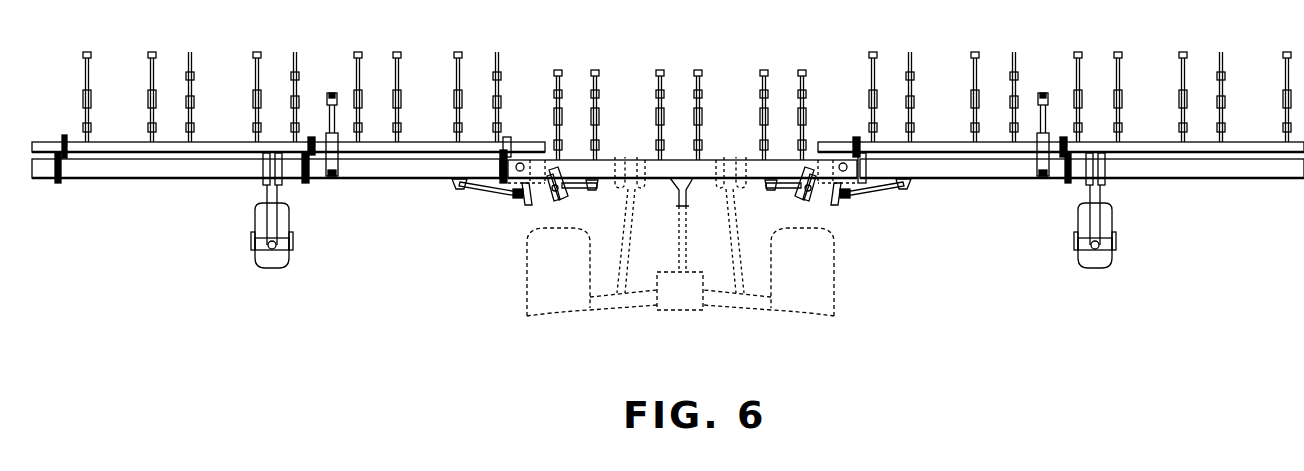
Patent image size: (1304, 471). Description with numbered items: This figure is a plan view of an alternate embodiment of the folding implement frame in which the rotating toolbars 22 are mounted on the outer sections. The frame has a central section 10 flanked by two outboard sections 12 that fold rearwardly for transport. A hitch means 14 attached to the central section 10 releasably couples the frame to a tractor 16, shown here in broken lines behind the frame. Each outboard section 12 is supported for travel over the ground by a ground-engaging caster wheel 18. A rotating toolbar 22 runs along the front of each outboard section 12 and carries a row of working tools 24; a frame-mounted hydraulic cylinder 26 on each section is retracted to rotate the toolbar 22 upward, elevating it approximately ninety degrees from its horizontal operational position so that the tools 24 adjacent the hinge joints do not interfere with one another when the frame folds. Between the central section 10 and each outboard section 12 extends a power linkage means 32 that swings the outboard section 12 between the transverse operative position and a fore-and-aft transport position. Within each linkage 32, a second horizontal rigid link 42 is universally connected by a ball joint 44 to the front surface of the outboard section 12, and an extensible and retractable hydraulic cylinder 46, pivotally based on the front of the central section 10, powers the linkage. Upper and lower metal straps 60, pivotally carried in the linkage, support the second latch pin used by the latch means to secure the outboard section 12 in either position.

The central section 10 is at (606, 160).
The outboard section 12 is at (386, 178).
The hitch means 14 is at (722, 186).
The tractor 16 is at (685, 311).
The caster wheel 18 is at (273, 264).
The rotating toolbar 22 is at (409, 143).
The working tools 24 is at (457, 54).
The hydraulic cylinder 26 is at (331, 168).
The power linkage means 32 is at (684, 207).
The second horizontal rigid link 42 is at (498, 196).
The ball joint 44 is at (458, 187).
The hydraulic cylinder 46 is at (580, 190).
The metal straps 60 is at (521, 200).